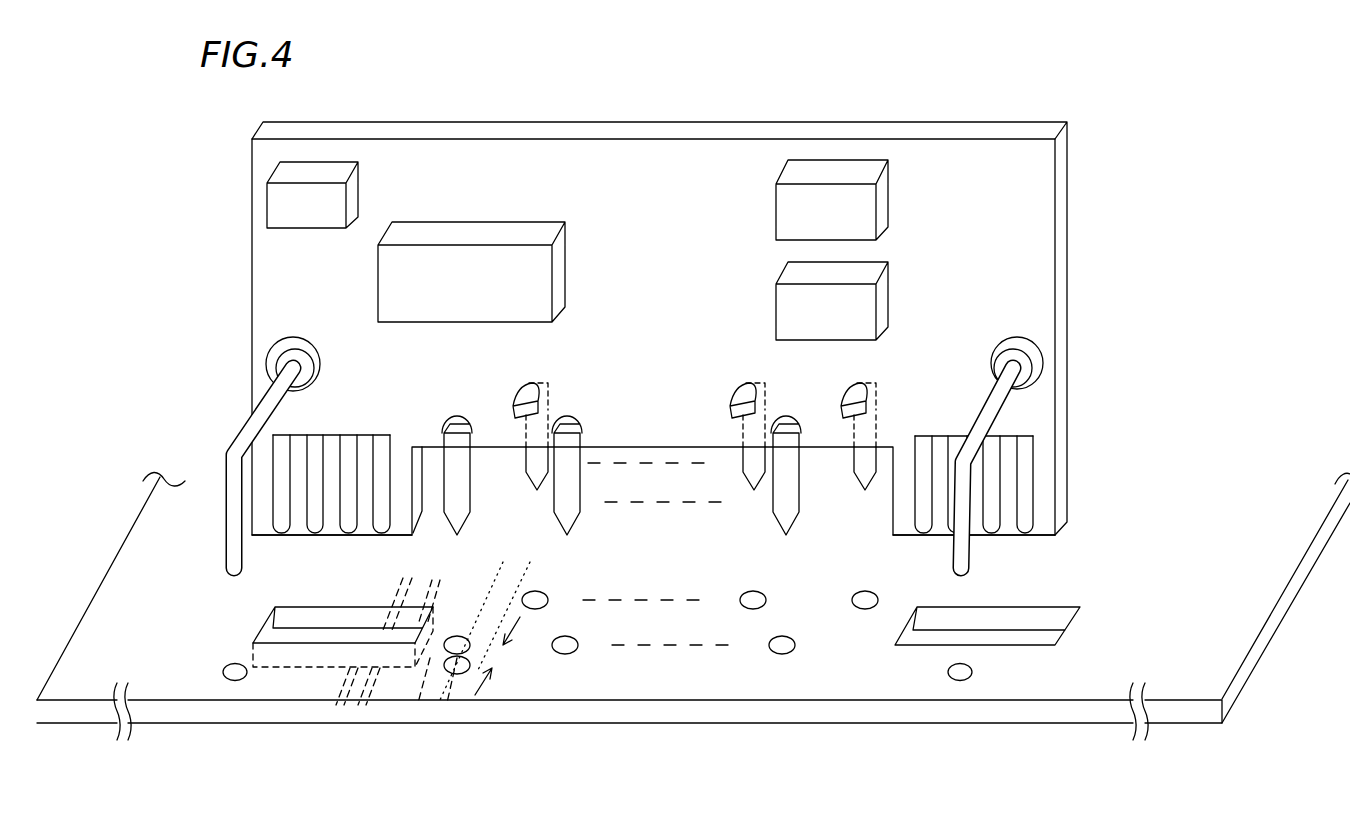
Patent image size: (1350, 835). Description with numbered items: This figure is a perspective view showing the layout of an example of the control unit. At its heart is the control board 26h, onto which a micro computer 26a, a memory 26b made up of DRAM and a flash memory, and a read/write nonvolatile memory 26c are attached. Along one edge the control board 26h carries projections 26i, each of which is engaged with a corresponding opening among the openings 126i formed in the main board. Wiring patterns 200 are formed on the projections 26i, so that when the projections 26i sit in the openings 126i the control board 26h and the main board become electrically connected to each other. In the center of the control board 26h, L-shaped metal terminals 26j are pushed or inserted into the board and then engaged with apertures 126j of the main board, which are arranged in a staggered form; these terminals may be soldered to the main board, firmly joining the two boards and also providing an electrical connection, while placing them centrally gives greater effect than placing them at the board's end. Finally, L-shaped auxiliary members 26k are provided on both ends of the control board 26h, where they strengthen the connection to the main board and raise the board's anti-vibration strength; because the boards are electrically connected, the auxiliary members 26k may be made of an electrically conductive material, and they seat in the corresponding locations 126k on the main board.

The control board 26h is at (955, 130).
The micro computer 26a is at (453, 265).
The memory 26b is at (880, 293).
The nonvolatile memory 26c is at (318, 190).
The projections 26i is at (307, 533).
The L-shaped metal terminals 26j is at (567, 440).
The L-shaped auxiliary members 26k is at (237, 455).
The wiring patterns 200 is at (1025, 467).
The openings 126i is at (1033, 640).
The apertures 126j is at (565, 654).
The locking pin receiving hole 126k is at (235, 680).